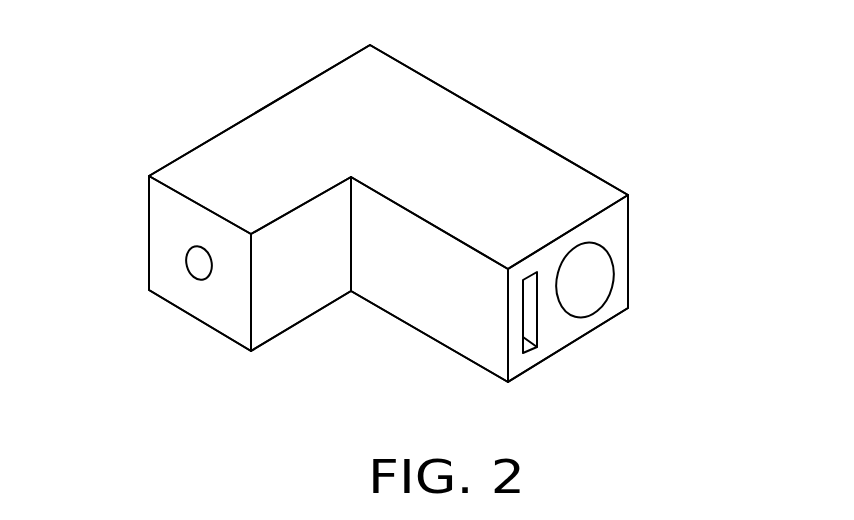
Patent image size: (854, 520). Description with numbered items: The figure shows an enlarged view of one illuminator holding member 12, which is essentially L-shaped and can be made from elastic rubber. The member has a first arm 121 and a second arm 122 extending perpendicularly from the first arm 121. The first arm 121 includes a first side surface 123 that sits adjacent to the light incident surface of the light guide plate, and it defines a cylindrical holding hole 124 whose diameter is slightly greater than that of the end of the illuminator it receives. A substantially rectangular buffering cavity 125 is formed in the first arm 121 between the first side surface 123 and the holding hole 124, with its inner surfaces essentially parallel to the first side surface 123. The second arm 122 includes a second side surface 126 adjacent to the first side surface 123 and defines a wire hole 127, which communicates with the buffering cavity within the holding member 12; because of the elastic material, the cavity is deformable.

The illuminator holding member 12 is at (512, 92).
The first arm 121 is at (518, 155).
The second arm 122 is at (230, 165).
The first side surface 123 is at (460, 306).
The holding hole 124 is at (590, 278).
The buffering cavity 125 is at (530, 315).
The second side surface 126 is at (291, 295).
The wire hole 127 is at (203, 263).